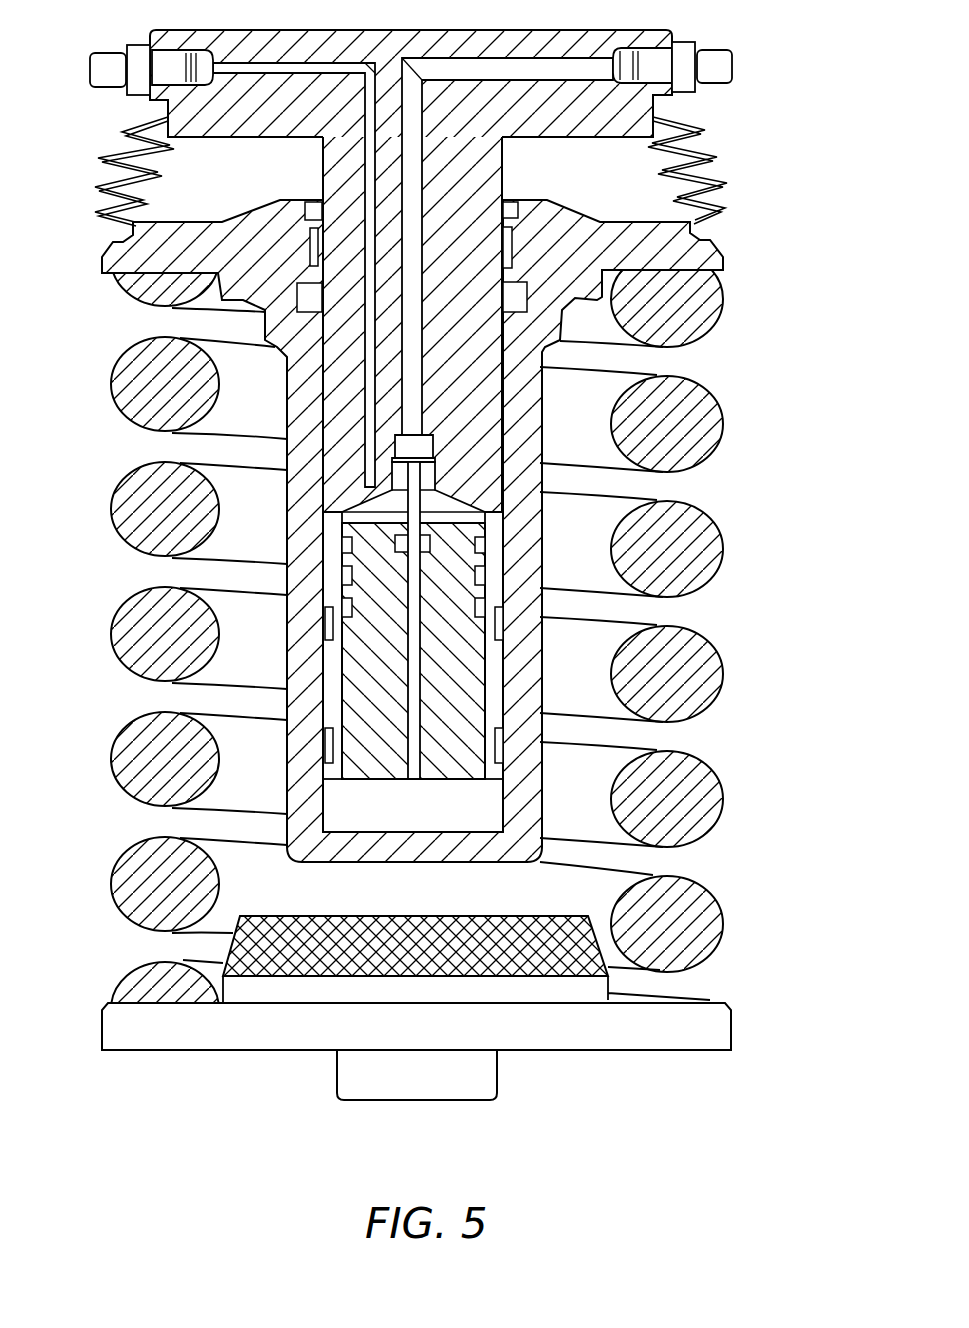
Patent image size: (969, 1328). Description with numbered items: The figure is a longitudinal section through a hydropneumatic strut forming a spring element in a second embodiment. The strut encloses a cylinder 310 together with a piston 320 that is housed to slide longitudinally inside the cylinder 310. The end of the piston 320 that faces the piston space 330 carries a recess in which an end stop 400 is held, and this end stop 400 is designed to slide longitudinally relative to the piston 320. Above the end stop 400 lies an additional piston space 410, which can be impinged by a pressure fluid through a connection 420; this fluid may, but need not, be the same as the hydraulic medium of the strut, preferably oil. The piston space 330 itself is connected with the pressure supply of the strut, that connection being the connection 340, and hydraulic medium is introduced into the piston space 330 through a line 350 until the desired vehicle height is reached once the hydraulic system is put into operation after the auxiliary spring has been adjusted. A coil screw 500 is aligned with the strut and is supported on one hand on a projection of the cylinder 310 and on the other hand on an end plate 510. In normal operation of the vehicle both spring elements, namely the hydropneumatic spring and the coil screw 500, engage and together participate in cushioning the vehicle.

The cylinder 310 is at (305, 579).
The piston 320 is at (335, 440).
The piston space 330 is at (470, 822).
The connection with the pressure supply 340 is at (713, 88).
The line 350 is at (414, 708).
The end stop 400 is at (480, 752).
The additional piston space 410 is at (372, 507).
The connection 420 is at (107, 95).
The coil screw 500 is at (710, 305).
The end plate 510 is at (403, 1037).